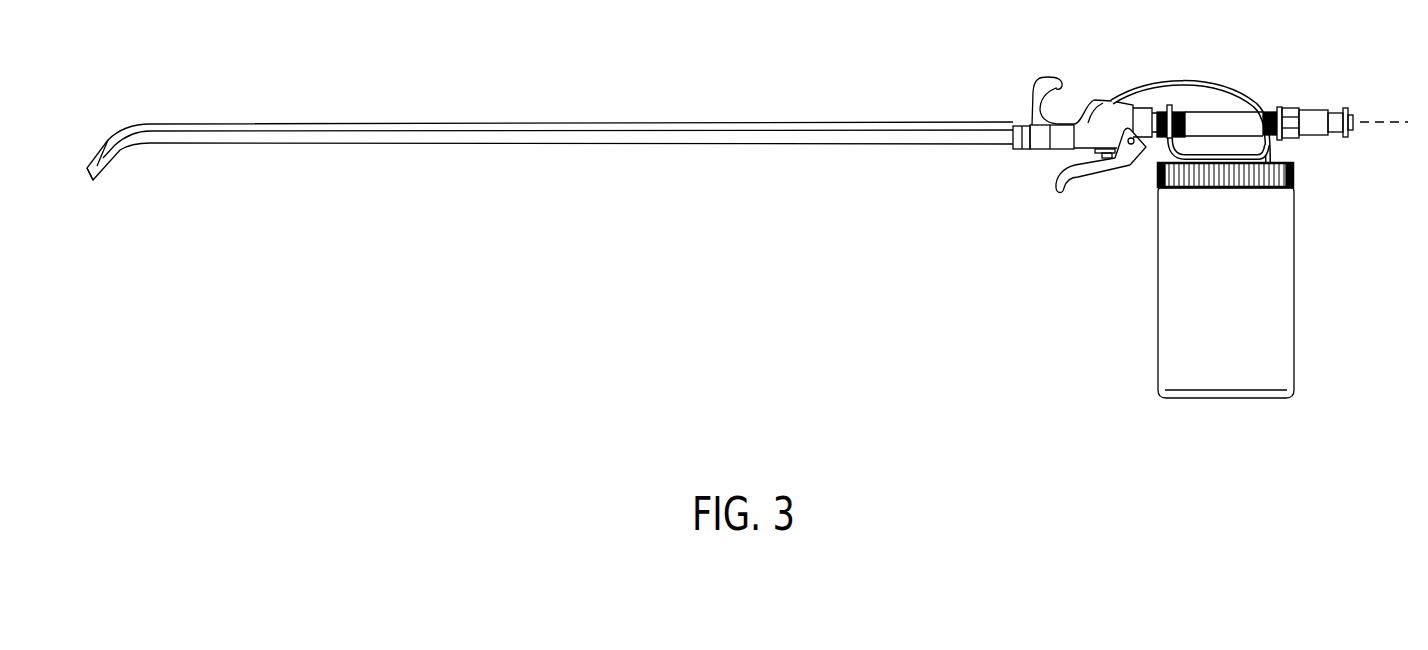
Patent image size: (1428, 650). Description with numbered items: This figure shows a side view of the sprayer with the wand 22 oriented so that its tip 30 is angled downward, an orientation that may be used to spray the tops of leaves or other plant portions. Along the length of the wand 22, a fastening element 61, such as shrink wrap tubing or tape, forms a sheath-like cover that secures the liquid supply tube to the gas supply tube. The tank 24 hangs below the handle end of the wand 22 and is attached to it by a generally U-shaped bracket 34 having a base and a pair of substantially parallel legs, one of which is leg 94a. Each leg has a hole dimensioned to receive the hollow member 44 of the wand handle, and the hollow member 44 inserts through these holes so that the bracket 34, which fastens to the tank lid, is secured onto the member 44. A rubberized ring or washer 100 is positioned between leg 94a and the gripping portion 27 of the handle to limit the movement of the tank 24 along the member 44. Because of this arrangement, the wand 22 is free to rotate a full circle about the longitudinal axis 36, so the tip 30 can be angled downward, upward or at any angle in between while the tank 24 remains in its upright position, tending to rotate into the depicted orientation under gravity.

The wand 22 is at (722, 137).
The fastening element 61 is at (450, 144).
The wand tip 30 is at (98, 168).
The gripping portion 27 is at (1122, 112).
The U-shaped bracket 34 is at (1284, 143).
The leg 94a is at (1174, 114).
The rubberized ring or washer 100 is at (1170, 108).
The hollow member 44 is at (1262, 117).
The longitudinal axis 36 is at (1377, 120).
The tank 24 is at (1295, 275).